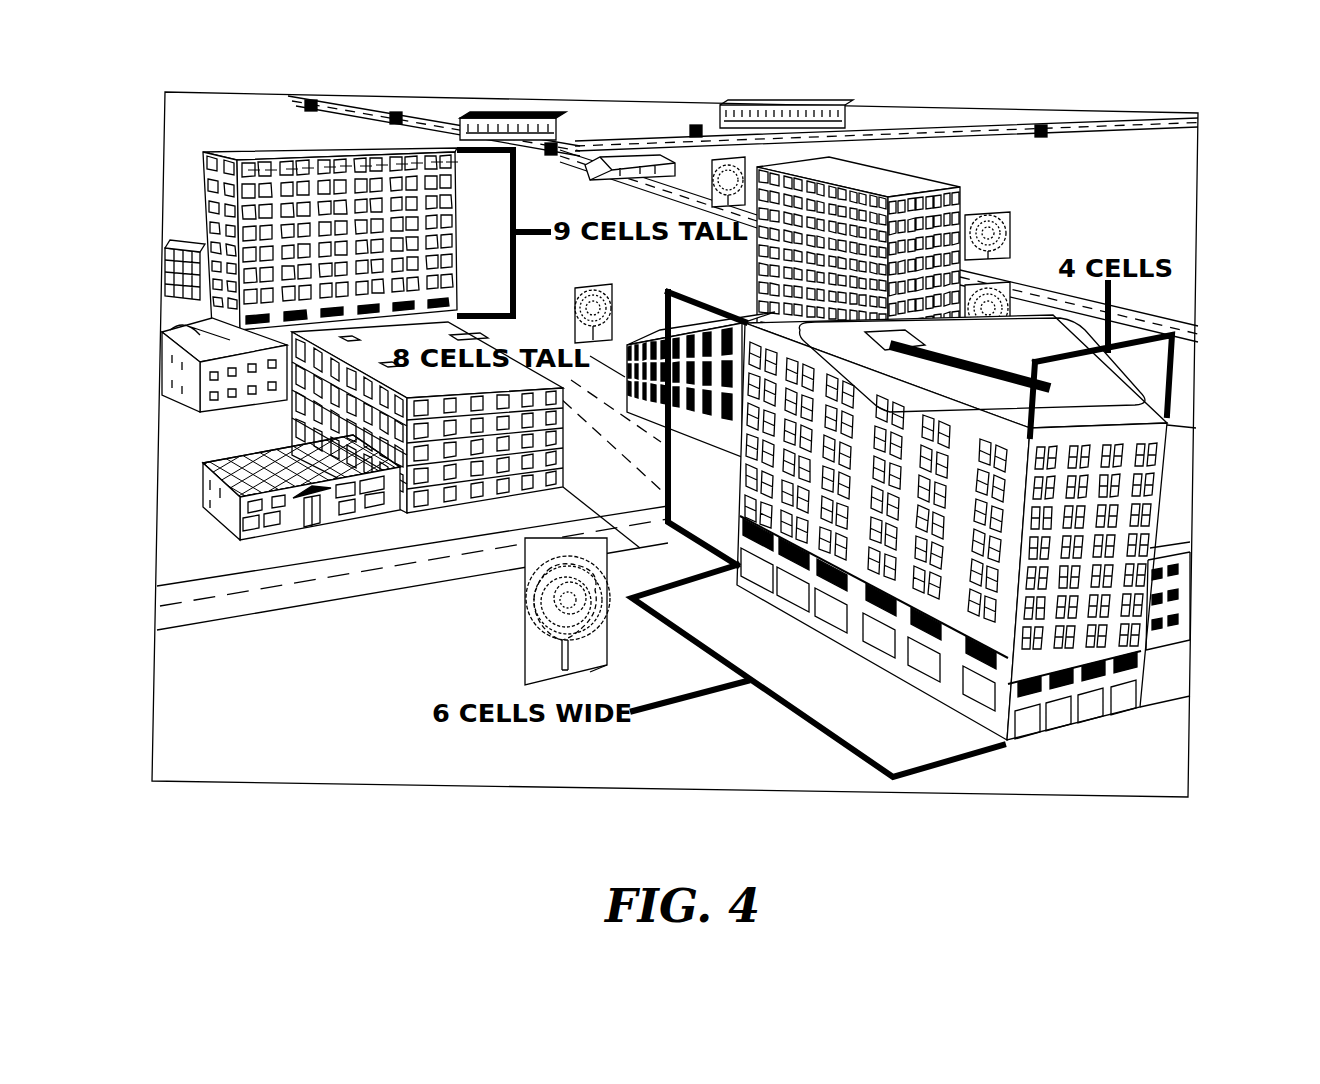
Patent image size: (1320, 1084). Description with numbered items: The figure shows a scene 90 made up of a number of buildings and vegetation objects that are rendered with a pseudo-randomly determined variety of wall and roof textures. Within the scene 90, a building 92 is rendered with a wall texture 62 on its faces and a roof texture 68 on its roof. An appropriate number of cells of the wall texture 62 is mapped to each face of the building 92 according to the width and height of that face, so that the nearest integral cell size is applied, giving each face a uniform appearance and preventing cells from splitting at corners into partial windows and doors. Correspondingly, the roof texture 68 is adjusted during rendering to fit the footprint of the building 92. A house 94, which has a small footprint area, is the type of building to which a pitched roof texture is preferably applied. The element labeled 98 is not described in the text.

The scene 90 is at (221, 814).
The house 94 is at (205, 337).
The tree 98 is at (527, 617).
The roof texture 68 is at (1133, 417).
The building 92 is at (1165, 448).
The wall texture 62 is at (1165, 580).